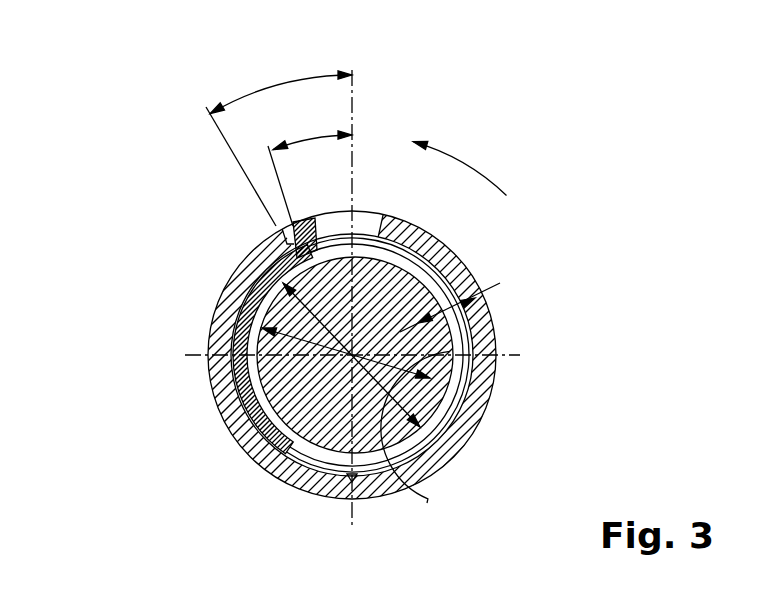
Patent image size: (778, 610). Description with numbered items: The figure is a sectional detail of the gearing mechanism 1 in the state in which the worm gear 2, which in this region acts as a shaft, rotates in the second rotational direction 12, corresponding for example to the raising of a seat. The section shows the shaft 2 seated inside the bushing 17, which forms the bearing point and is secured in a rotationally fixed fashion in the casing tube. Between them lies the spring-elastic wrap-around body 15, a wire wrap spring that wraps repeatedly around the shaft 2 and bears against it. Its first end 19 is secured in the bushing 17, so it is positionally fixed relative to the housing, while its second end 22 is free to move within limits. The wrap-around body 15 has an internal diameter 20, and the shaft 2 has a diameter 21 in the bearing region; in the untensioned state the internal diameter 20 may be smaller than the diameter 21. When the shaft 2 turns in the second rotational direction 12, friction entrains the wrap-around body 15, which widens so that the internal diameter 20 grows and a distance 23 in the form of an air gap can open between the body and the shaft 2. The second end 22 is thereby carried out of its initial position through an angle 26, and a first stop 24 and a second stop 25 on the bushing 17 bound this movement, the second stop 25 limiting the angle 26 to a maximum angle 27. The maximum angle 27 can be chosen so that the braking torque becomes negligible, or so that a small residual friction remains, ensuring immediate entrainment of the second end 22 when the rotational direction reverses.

The gearing mechanism 1 is at (142, 233).
The worm gear 2 is at (297, 398).
The second rotational direction 12 is at (466, 163).
The spring-elastic wrap-around body 15 is at (249, 298).
The bushing 17 is at (478, 398).
The first end 19 is at (337, 497).
The internal diameter 20 is at (416, 440).
The diameter 21 is at (411, 380).
The second end 22 is at (312, 218).
The distance 23 is at (457, 322).
The first stop 24 is at (373, 228).
The second stop 25 is at (284, 228).
The angle 26 is at (307, 136).
The maximum angle 27 is at (278, 82).